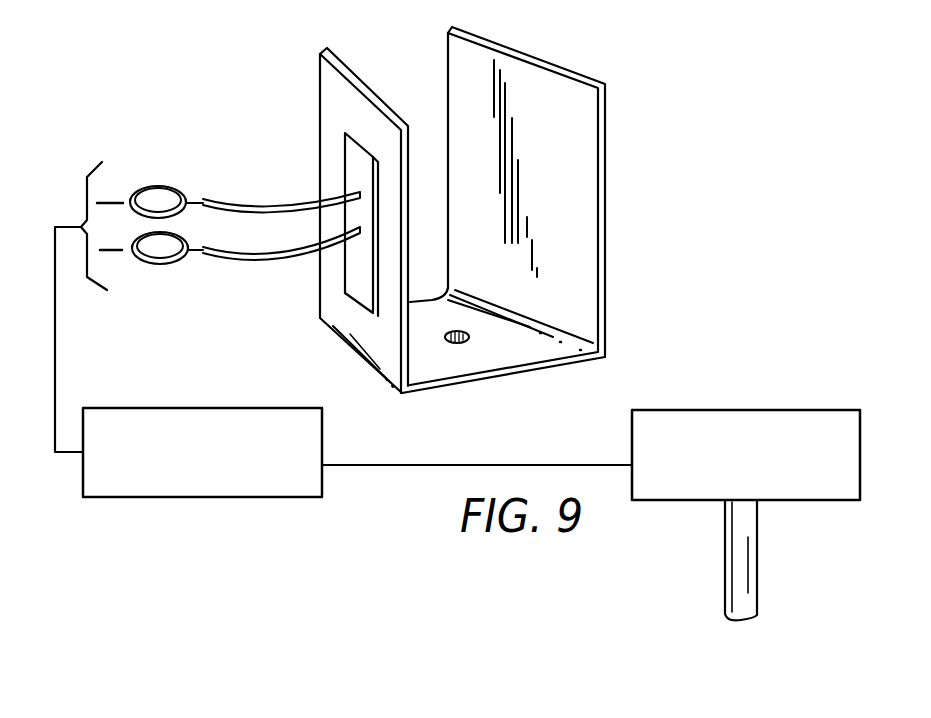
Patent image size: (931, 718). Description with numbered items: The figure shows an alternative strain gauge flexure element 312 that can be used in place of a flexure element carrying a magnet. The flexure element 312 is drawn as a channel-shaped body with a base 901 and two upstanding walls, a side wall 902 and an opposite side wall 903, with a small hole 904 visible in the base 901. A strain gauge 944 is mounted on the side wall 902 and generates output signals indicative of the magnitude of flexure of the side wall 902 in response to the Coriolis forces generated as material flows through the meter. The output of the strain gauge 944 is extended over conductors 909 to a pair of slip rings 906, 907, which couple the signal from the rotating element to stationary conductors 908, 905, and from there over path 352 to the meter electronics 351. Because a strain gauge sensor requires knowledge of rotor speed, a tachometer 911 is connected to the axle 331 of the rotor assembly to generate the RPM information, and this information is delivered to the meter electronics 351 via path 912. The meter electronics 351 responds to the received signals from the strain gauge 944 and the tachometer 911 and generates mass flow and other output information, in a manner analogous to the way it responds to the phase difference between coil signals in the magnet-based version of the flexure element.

The flexure element 312 is at (606, 195).
The side wall 902 is at (337, 93).
The second side wall 903 is at (578, 255).
The base plate 901 is at (463, 383).
The strain gauge 944 is at (353, 170).
The mounting hole 904 is at (461, 337).
The conductor 908 is at (117, 202).
The conductor 905 is at (120, 253).
The slip ring 906 is at (163, 188).
The slip ring 907 is at (173, 267).
The conductors 909 is at (240, 213).
The path 352 is at (57, 367).
The meter electronics 351 is at (223, 497).
The path 912 is at (582, 462).
The tachometer 911 is at (740, 492).
The axle 331 is at (757, 572).